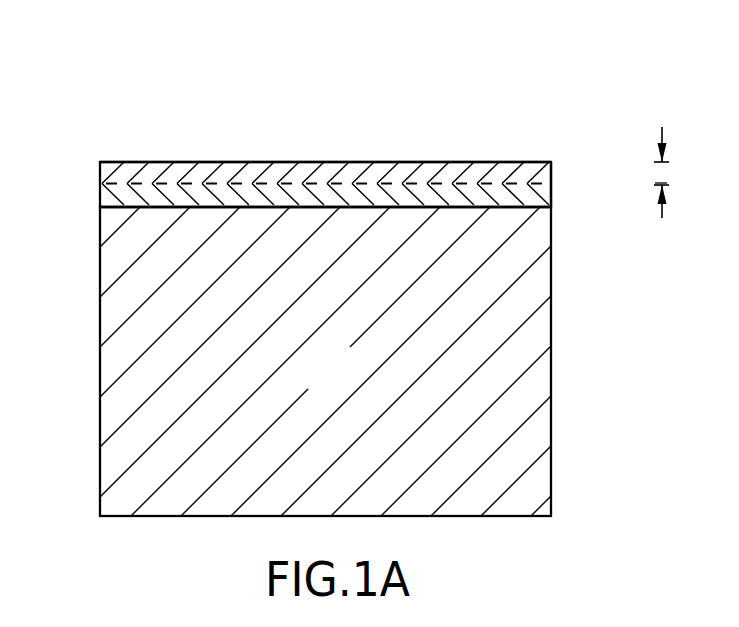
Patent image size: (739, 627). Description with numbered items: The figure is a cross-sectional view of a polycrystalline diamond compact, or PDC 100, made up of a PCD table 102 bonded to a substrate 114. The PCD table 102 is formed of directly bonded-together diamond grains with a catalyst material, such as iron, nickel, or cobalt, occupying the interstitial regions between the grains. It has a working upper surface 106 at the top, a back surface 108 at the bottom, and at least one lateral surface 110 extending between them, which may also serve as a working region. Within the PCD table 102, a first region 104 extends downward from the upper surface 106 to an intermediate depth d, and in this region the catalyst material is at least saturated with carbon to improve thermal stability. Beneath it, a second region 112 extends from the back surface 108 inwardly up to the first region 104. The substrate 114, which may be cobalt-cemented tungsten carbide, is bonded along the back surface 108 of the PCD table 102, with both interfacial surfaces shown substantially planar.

The PDC 100 is at (613, 88).
The PCD table 102 is at (563, 162).
The first region 104 is at (89, 182).
The upper surface 106 is at (378, 161).
The back surface 108 is at (537, 207).
The lateral surface 110 is at (551, 162).
The second region 112 is at (89, 186).
The substrate 114 is at (343, 371).